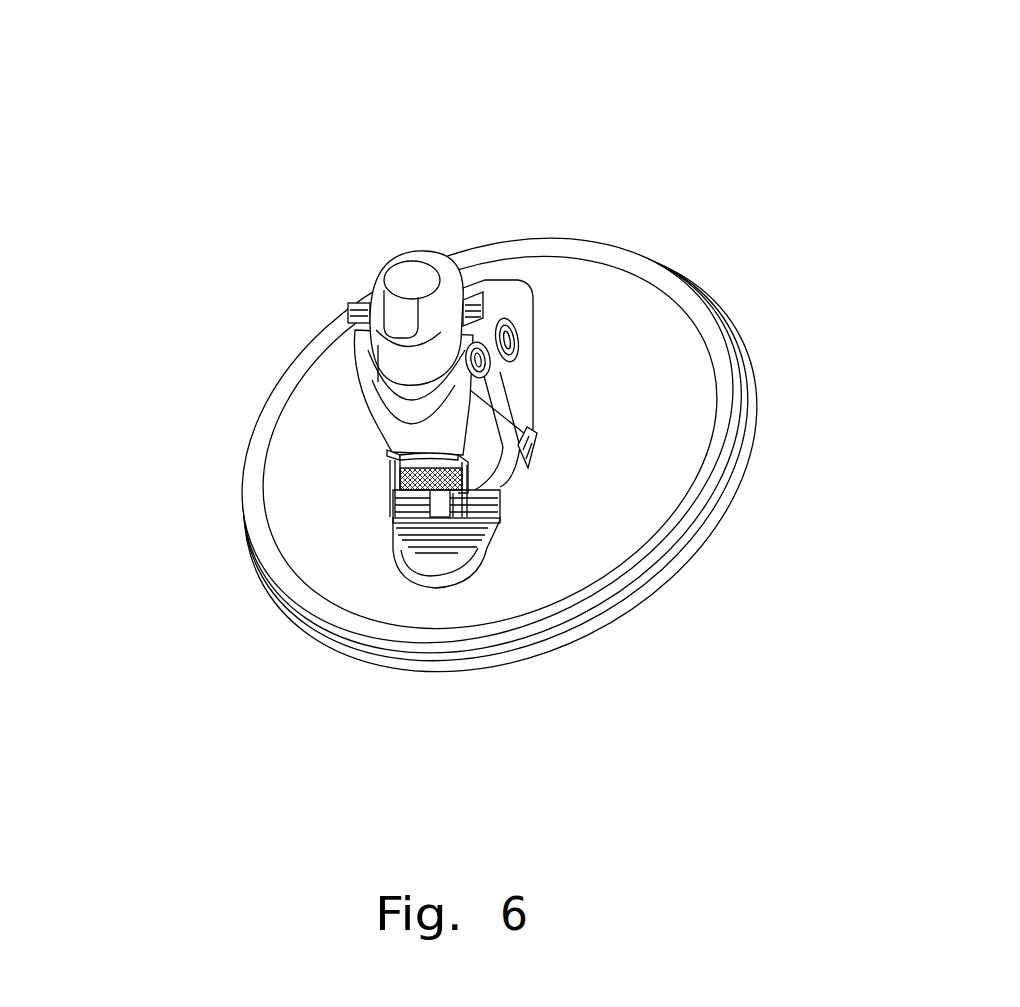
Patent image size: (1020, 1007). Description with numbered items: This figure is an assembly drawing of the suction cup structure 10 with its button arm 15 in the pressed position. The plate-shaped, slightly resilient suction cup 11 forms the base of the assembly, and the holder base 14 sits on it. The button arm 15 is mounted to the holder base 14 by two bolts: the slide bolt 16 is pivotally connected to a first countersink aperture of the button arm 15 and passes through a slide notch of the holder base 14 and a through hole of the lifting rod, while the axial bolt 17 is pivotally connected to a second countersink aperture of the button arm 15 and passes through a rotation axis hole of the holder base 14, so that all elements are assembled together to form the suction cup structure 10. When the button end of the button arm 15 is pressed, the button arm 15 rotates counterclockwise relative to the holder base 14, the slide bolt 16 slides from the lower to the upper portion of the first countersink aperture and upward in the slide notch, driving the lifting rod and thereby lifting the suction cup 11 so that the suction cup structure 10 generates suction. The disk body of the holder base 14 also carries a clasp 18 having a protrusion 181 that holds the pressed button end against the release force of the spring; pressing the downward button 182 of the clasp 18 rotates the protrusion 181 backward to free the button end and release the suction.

The suction cup structure 10 is at (352, 65).
The suction cup 11 is at (749, 510).
The holder base 14 is at (644, 287).
The button arm 15 is at (368, 420).
The slide bolt 16 is at (508, 318).
The axial bolt 17 is at (479, 343).
The clasp 18 is at (440, 546).
The protrusion 181 is at (443, 500).
The downward button 182 is at (470, 533).